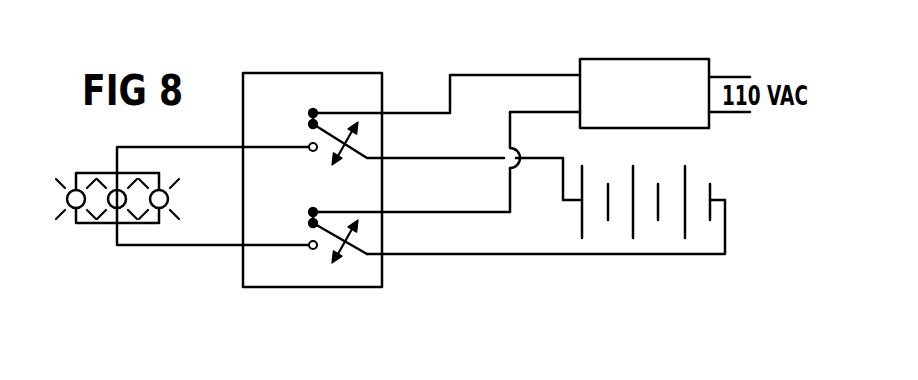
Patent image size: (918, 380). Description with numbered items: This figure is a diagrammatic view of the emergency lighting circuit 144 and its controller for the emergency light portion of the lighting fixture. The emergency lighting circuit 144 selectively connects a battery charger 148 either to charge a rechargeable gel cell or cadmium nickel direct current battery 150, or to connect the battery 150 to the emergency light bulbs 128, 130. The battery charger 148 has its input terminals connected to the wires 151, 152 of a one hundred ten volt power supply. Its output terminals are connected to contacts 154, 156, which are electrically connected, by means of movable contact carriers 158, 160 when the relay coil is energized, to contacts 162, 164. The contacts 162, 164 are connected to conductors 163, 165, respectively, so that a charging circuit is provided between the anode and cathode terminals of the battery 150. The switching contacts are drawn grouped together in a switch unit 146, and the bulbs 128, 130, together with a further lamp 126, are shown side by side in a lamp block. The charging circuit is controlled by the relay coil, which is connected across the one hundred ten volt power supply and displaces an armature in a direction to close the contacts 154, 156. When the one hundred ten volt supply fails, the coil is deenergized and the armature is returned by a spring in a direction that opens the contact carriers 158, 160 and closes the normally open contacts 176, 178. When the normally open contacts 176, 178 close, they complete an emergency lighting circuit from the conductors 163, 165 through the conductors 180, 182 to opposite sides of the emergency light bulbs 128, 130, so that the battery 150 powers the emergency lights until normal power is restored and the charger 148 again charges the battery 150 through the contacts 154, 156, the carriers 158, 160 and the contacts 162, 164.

The indicator lamp 126 is at (75, 191).
The emergency light bulb 128 is at (114, 208).
The emergency light bulb 130 is at (168, 198).
The emergency lighting circuit 144 is at (740, 268).
The switch unit 146 is at (319, 73).
The battery charger 148 is at (630, 58).
The battery 150 is at (686, 183).
The AC power lead 151 is at (727, 77).
The wire 152 is at (727, 112).
The contact 154 is at (312, 112).
The contact 156 is at (313, 210).
The movable contact carrier 158 is at (358, 150).
The movable contact carrier 160 is at (357, 250).
The contact 162 is at (311, 124).
The conductor 163 is at (543, 157).
The contact 164 is at (311, 223).
The conductor 165 is at (563, 255).
The normally open contact 176 is at (312, 151).
The normally open contact 178 is at (312, 249).
The conductor 180 is at (155, 147).
The conductor 182 is at (191, 245).